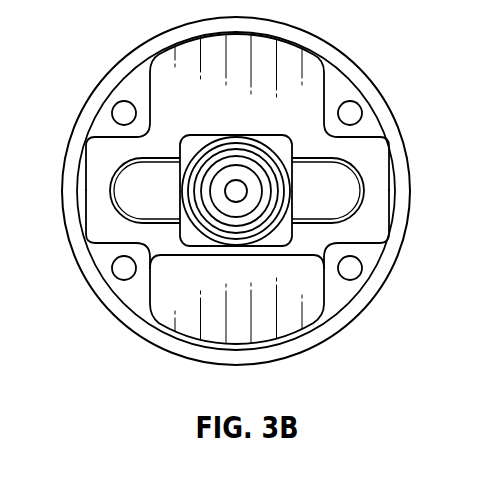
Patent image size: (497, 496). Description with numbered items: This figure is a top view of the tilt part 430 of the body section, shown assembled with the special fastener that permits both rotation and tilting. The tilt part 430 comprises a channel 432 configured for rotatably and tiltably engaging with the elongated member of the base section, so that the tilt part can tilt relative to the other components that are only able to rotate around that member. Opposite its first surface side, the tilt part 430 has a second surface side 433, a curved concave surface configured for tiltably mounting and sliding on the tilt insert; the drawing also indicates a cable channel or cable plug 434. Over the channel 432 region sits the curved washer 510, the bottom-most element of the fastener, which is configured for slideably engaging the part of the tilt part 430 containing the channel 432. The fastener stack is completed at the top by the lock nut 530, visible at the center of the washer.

The tilt part 430 is at (378, 104).
The channel 432 is at (137, 197).
The second surface side 433 is at (270, 65).
The cable channel or cable plug 434 is at (170, 310).
The curved washer 510 is at (180, 137).
The lock nut 530 is at (248, 192).